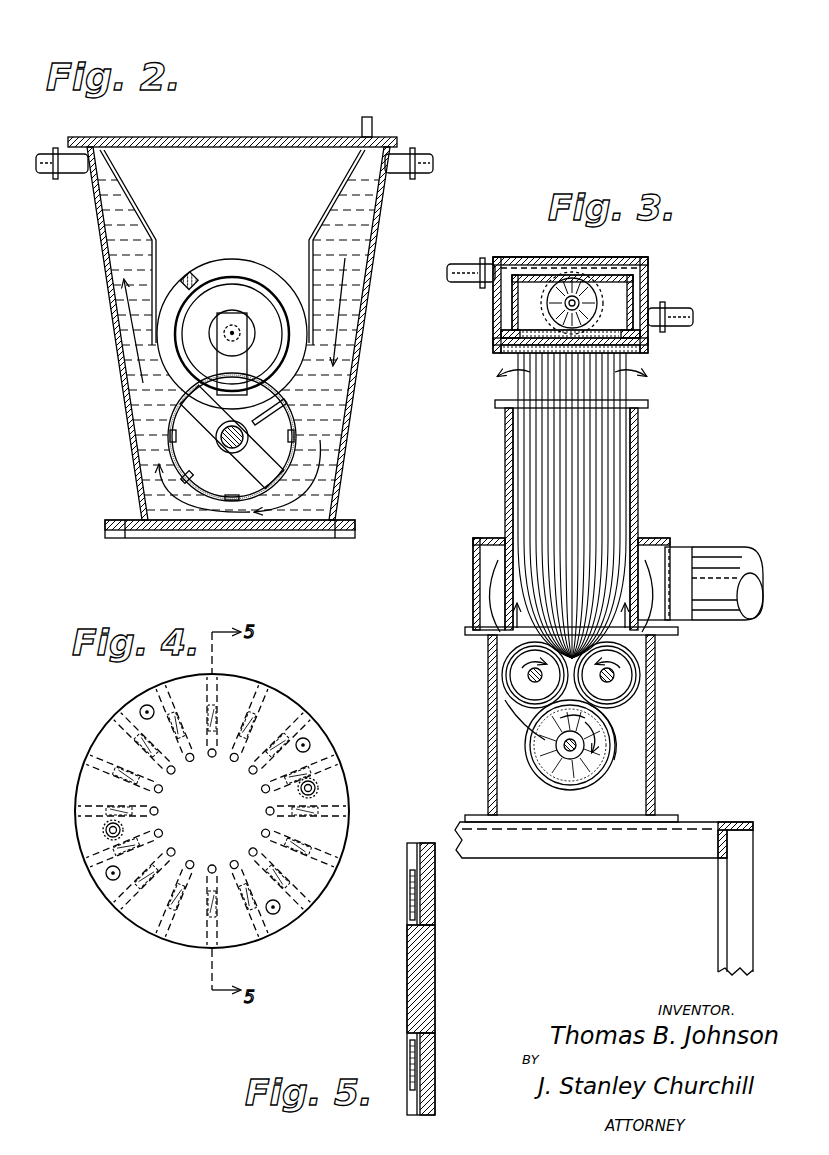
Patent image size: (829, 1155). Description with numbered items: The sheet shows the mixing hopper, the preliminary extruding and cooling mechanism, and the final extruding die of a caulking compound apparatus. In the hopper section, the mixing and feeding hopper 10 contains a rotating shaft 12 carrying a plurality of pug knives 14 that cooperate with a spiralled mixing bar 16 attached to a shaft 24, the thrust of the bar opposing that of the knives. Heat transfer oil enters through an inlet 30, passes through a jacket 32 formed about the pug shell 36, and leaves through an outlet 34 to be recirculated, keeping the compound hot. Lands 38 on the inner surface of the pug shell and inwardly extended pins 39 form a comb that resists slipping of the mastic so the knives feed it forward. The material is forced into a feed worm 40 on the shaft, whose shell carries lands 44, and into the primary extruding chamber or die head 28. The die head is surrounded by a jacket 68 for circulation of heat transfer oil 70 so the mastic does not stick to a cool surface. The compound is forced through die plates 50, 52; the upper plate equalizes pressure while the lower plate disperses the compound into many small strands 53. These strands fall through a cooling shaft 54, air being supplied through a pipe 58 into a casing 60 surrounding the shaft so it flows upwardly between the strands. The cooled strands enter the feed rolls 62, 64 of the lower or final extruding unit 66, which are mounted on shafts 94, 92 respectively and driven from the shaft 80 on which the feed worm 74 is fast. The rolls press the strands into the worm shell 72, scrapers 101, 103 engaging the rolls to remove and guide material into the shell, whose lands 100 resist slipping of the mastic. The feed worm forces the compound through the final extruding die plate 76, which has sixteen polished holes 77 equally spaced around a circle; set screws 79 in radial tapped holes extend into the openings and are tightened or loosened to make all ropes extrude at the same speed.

In FIG. 2, the mixing and feeding hopper 10 is at (248, 128).
In FIG. 2, the rotating shaft 12 is at (246, 437).
In FIG. 3, the rotating shaft 12 is at (561, 303).
In FIG. 2, the pug knives 14 is at (232, 437).
In FIG. 2, the spiralled mixing bar 16 is at (250, 263).
In FIG. 2, the shaft 24 is at (232, 325).
In FIG. 3, the primary extruding chamber or die head 28 is at (615, 285).
In FIG. 2, the inlet 30 is at (398, 152).
In FIG. 2, the jacket 32 is at (345, 378).
In FIG. 2, the outlet 34 is at (80, 172).
In FIG. 2, the pug shell 36 is at (297, 445).
In FIG. 2, the lands 38 is at (193, 467).
In FIG. 2, the pins 39 is at (268, 417).
In FIG. 3, the feed worm 40 is at (572, 278).
In FIG. 3, the lands 44 is at (646, 317).
In FIG. 3, the die plate 50 is at (520, 355).
In FIG. 3, the die plate 52 is at (610, 355).
In FIG. 3, the small strands 53 is at (640, 442).
In FIG. 3, the cooling shaft 54 is at (640, 482).
In FIG. 3, the pipe 58 is at (712, 547).
In FIG. 3, the casing 60 is at (474, 540).
In FIG. 3, the feed roll 62 is at (508, 668).
In FIG. 3, the feed roll 64 is at (636, 672).
In FIG. 3, the lower or final extruding unit 66 is at (686, 728).
In FIG. 3, the jacket 68 is at (520, 258).
In FIG. 3, the heat transfer oil 70 is at (500, 305).
In FIG. 3, the worm shell 72 is at (555, 748).
In FIG. 3, the feed worm 74 is at (556, 773).
In FIG. 4, the final extruding die plate 76 is at (285, 690).
In FIG. 5, the final extruding die plate 76 is at (437, 970).
In FIG. 4, the holes 77 is at (258, 770).
In FIG. 5, the holes 77 is at (437, 922).
In FIG. 4, the set screws 79 is at (292, 740).
In FIG. 5, the set screws 79 is at (410, 900).
In FIG. 3, the shaft 80 is at (600, 776).
In FIG. 3, the shaft 92 is at (614, 678).
In FIG. 3, the shaft 94 is at (528, 678).
In FIG. 3, the lands 100 is at (535, 765).
In FIG. 3, the scraper 101 is at (535, 705).
In FIG. 3, the scraper 103 is at (545, 723).